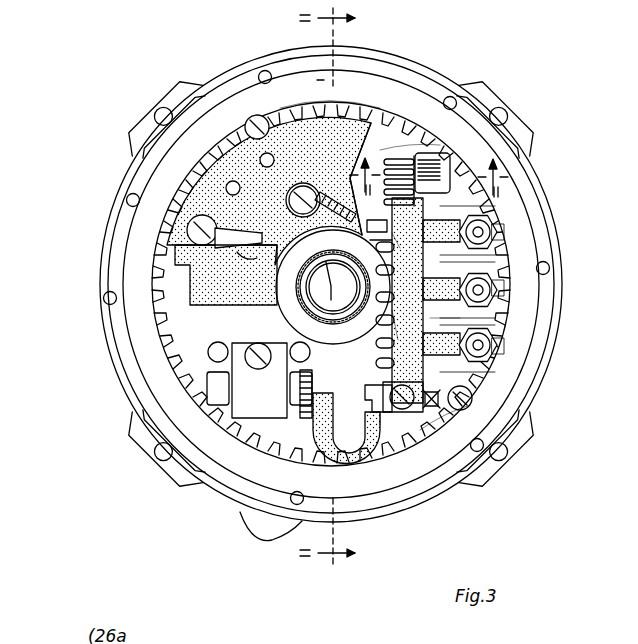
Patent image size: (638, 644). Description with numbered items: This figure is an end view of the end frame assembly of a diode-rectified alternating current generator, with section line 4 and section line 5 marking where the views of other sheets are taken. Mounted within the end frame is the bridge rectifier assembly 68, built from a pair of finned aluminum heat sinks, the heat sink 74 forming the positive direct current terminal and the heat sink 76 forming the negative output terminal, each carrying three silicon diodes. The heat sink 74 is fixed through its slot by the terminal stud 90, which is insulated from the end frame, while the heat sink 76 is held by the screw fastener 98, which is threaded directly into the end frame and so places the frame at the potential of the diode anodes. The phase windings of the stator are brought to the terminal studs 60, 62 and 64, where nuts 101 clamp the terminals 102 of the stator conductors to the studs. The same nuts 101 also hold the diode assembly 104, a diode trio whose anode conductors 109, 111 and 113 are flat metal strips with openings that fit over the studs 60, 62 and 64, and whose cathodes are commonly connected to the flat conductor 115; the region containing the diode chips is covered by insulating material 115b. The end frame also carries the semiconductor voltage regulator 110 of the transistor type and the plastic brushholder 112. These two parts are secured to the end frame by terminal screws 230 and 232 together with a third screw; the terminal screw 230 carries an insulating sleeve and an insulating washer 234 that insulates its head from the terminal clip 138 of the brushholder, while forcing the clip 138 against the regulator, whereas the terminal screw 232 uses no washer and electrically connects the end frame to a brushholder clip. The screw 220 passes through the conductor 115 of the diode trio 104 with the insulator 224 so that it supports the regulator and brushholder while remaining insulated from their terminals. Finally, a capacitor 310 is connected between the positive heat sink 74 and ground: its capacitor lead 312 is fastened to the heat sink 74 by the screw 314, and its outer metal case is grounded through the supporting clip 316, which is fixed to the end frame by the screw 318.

The section line 4— 4 is at (308, 288).
The section line 5— 5 is at (429, 168).
The terminal stud 60 is at (470, 222).
The terminal stud 62 is at (470, 287).
The terminal stud 64 is at (490, 360).
The bridge rectifier assembly 68 is at (408, 153).
The heat sink 74 is at (415, 157).
The heat sink 76 is at (487, 330).
The terminal stud 90 is at (440, 165).
The screw fastener 98 is at (445, 434).
The nuts 101 is at (470, 262).
The terminals 102 is at (500, 230).
The diode assembly 104 is at (392, 320).
The conductor 109 is at (432, 233).
The semiconductor voltage regulator 110 is at (312, 122).
The conductor 111 is at (388, 318).
The brushholder 112 is at (167, 258).
The conductor 113 is at (470, 366).
The conductor 115 is at (392, 233).
The insulating material 115b is at (372, 397).
The terminal clip 138 is at (228, 242).
The terminal screw 220 is at (283, 112).
The insulator 224 is at (291, 187).
The terminal screw 230 is at (190, 233).
The terminal screw 232 is at (243, 130).
The insulating washer 234 is at (217, 208).
The capacitor 310 is at (217, 382).
The capacitor lead 312 is at (368, 458).
The screw 314 is at (397, 427).
The supporting clip 316 is at (237, 350).
The screw 318 is at (260, 363).